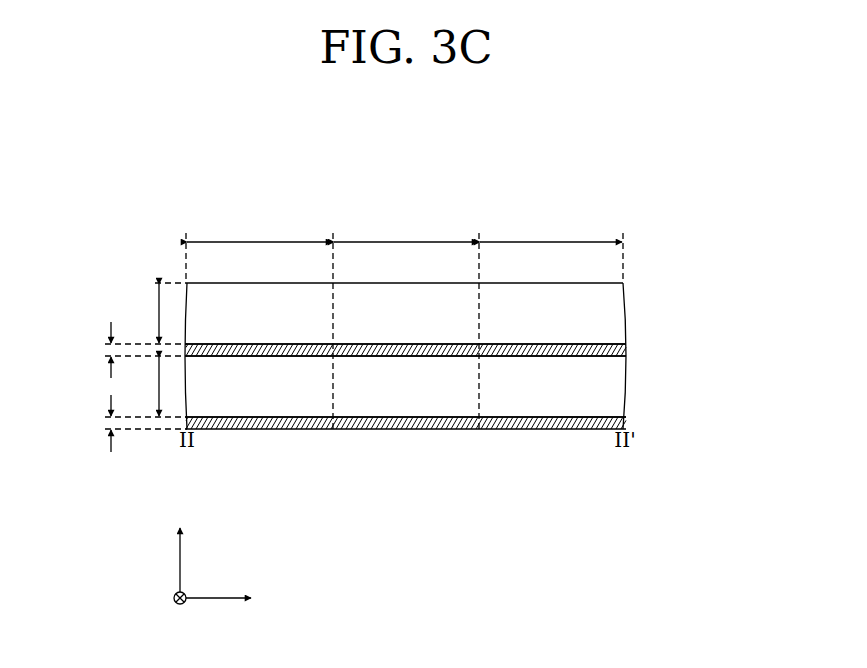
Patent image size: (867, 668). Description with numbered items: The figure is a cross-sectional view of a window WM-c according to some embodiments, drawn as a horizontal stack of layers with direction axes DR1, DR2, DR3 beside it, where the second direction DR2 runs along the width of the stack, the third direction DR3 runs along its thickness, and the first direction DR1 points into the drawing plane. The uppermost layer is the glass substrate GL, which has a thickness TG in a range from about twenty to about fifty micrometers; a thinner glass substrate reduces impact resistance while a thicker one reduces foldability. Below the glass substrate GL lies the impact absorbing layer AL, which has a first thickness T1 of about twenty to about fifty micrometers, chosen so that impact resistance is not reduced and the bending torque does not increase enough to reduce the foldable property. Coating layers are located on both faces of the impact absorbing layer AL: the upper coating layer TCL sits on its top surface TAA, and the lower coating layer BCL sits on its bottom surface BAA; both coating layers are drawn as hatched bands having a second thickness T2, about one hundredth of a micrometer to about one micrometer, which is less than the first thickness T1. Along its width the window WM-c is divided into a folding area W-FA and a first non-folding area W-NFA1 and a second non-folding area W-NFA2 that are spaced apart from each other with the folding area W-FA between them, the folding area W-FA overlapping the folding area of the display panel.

The window WM-c is at (682, 212).
The glass substrate GL is at (613, 296).
The upper coating layer TCL is at (622, 349).
The top surface TAA is at (575, 351).
The impact absorbing layer AL is at (613, 387).
The lower coating layer BCL is at (622, 421).
The bottom surface BAA is at (578, 422).
The first non-folding area W-NFA1 is at (259, 227).
The folding area W-FA is at (406, 227).
The second non-folding area W-NFA2 is at (551, 227).
The thickness of glass substrate TG is at (146, 313).
The first thickness T1 is at (146, 386).
The second thickness T2 is at (96, 387).
The first direction DR1 is at (180, 613).
The second direction DR2 is at (242, 599).
The third direction DR3 is at (180, 546).